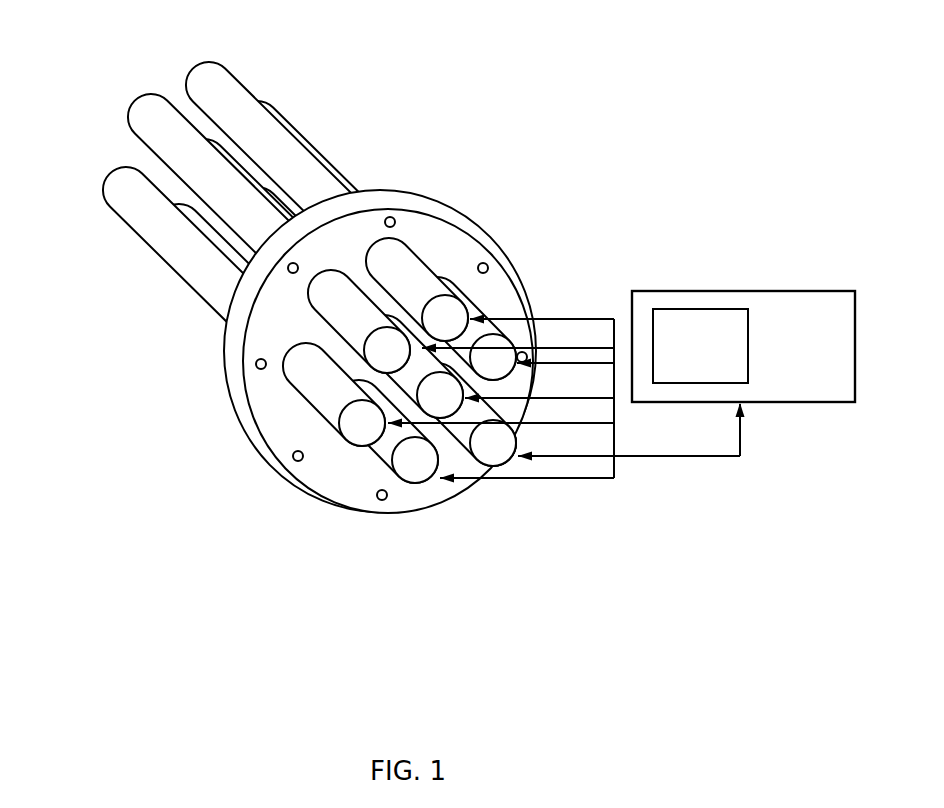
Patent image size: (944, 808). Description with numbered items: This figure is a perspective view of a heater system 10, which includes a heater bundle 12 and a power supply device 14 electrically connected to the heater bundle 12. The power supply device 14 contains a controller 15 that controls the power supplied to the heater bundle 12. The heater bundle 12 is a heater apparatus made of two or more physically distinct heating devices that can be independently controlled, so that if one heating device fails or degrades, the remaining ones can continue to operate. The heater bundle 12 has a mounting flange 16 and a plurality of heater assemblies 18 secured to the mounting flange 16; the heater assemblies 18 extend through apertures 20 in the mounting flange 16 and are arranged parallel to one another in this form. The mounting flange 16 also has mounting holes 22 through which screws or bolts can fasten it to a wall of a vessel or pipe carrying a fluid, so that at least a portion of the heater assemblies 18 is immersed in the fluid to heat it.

The heater system 10 is at (575, 29).
The heater bundle 12 is at (458, 167).
The power supply device 14 is at (743, 310).
The controller 15 is at (685, 361).
The mounting flange 16 is at (233, 405).
The heater assemblies 18 is at (124, 87).
The apertures 20 is at (312, 309).
The mounting holes 22 is at (485, 262).